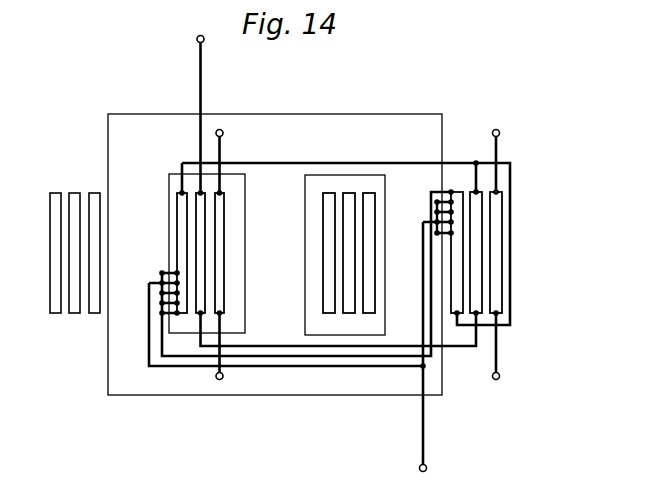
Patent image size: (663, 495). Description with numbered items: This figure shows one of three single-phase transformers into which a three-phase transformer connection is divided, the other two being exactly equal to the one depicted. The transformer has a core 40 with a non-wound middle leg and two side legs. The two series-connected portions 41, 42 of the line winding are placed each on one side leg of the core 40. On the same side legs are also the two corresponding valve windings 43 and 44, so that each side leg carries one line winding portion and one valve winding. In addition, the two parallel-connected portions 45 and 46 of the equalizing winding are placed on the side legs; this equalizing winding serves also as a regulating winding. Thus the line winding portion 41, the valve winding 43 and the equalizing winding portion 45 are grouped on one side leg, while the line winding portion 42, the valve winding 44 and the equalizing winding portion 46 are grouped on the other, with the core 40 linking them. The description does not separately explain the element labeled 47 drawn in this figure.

The core 40 is at (275, 254).
The line winding portion 41 is at (203, 210).
The line winding portion 42 is at (477, 217).
The valve winding 43 is at (219, 208).
The valve winding 44 is at (494, 246).
The equalizing winding portion 45 is at (184, 218).
The equalizing winding portion 46 is at (458, 256).
The second electrode group 47 is at (321, 255).